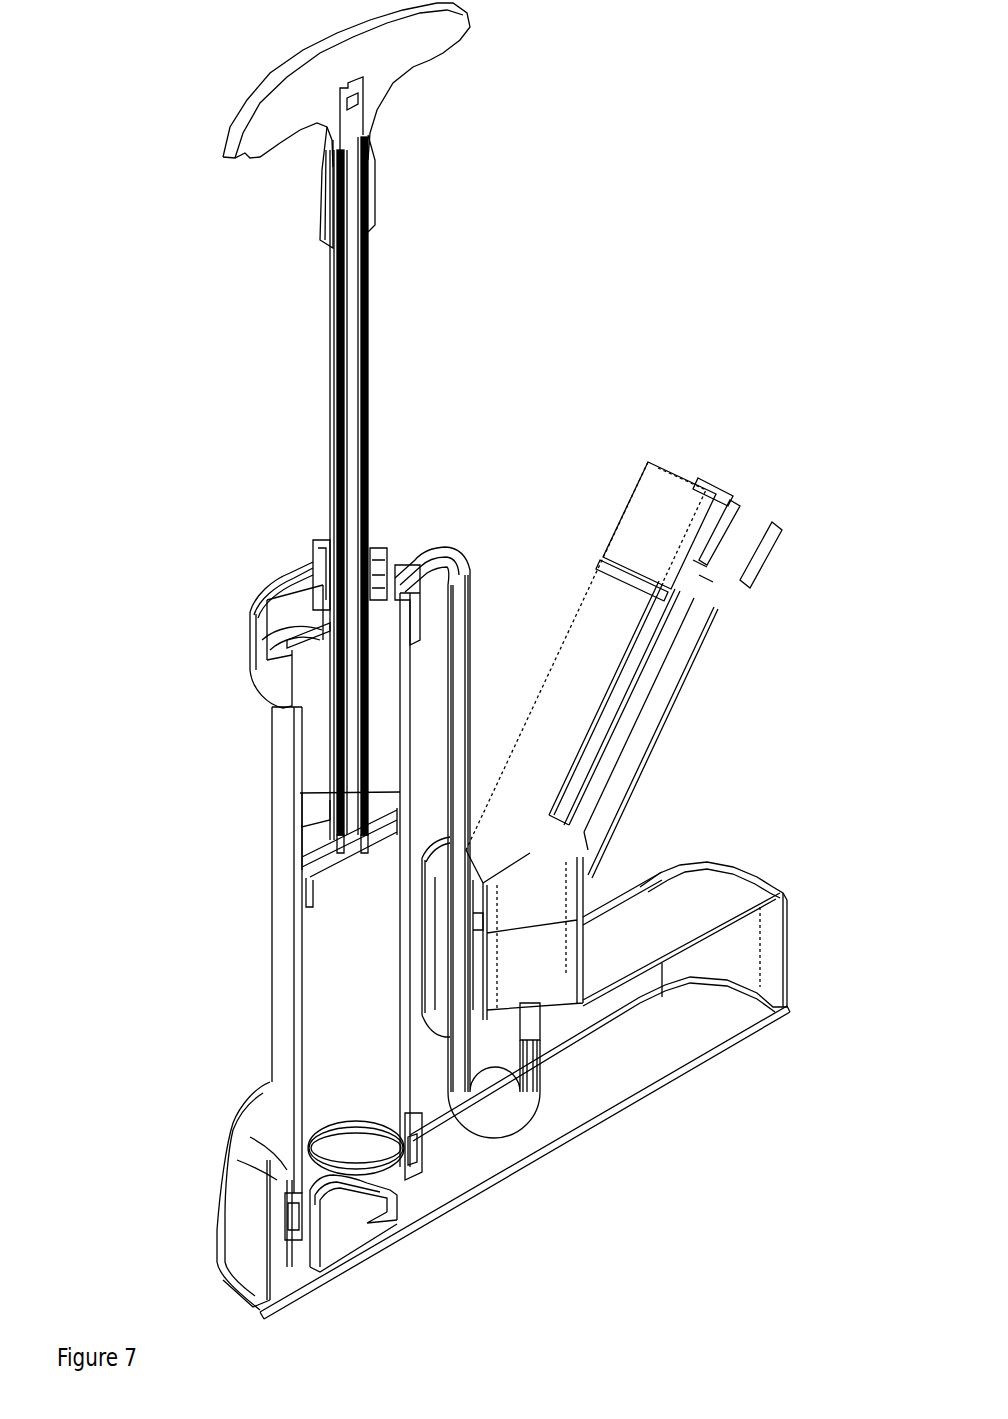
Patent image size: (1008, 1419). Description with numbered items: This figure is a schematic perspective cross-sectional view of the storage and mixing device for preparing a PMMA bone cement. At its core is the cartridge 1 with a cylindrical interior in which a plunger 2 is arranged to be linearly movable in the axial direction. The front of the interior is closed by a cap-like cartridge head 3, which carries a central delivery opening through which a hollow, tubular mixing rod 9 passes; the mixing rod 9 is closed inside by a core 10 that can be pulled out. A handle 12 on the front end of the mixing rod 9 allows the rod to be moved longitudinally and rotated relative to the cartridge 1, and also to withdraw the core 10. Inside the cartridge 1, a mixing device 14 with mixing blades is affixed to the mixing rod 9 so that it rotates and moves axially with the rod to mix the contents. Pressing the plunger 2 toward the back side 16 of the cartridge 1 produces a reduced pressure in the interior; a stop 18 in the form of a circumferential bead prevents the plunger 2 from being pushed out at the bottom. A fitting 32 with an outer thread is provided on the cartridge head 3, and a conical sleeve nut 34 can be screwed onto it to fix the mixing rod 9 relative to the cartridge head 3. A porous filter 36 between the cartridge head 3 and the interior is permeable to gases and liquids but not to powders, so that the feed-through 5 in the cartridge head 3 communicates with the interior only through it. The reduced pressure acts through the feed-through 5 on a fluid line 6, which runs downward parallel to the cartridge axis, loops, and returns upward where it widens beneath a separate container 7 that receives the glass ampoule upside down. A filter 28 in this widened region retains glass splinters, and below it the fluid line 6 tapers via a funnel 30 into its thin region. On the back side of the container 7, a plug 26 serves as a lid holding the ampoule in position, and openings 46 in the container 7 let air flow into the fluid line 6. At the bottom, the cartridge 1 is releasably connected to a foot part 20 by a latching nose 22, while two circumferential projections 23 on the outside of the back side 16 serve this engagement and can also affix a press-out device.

The cartridge 1 is at (285, 777).
The plunger 2 is at (395, 825).
The cartridge head 3 is at (300, 606).
The feed-through 5 is at (405, 568).
The fluid line 6 is at (465, 590).
The container 7 is at (597, 650).
The mixing rod 9 is at (330, 363).
The core 10 is at (357, 272).
The handle 12 is at (388, 57).
The mixing device 14 is at (305, 855).
The back side 16 is at (332, 1178).
The stop 18 is at (332, 1136).
The foot part 20 is at (645, 1055).
The latching nose 22 is at (410, 1117).
The circumferential projections 23 is at (290, 1212).
The plug 26 is at (716, 497).
The filter 28 is at (520, 967).
The funnel 30 is at (540, 1003).
The fitting 32 is at (376, 545).
The sleeve nut 34 is at (315, 553).
The porous filter 36 is at (308, 638).
The openings 46 is at (710, 530).